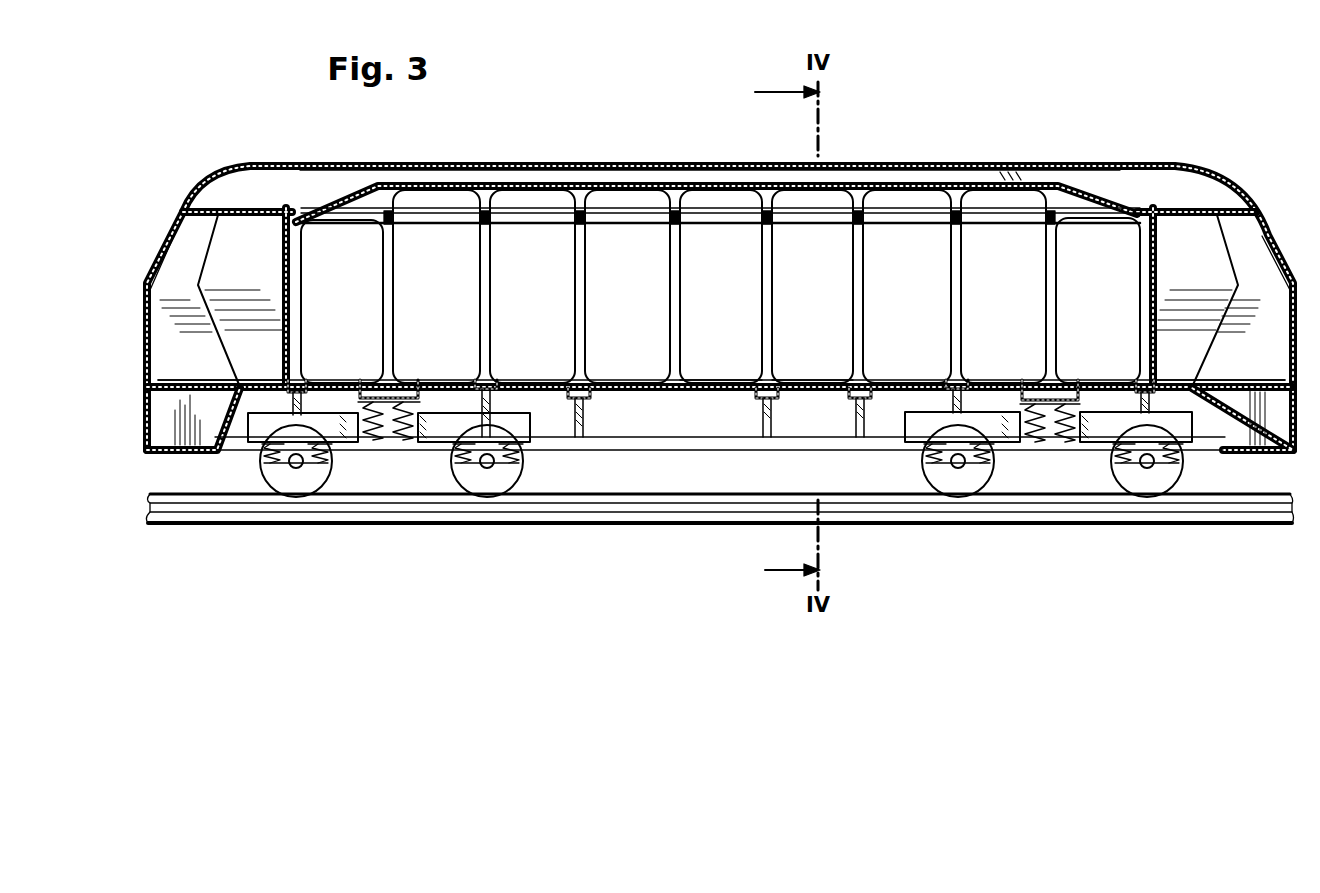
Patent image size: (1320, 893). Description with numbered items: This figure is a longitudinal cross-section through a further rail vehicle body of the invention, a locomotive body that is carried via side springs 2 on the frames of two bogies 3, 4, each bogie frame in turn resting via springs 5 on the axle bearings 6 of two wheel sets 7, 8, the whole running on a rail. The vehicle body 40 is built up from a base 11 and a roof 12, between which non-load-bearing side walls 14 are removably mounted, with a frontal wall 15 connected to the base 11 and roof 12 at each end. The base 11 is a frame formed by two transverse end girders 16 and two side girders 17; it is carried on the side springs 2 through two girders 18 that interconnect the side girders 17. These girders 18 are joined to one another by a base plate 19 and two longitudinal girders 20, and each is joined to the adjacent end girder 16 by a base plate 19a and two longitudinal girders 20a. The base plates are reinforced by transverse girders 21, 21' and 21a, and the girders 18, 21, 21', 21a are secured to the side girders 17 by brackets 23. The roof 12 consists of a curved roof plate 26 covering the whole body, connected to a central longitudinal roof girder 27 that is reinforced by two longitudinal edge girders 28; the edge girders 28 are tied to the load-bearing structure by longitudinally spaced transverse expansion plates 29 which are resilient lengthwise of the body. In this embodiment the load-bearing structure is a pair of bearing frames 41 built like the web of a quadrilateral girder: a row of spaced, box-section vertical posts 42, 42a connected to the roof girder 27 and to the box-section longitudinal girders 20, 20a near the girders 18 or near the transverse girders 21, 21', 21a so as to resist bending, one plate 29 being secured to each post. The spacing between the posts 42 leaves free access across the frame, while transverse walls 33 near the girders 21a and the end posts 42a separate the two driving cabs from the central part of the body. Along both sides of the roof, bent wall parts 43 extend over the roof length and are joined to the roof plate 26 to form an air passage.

The side springs 2 is at (385, 441).
The bogie 3 is at (343, 440).
The bogie 4 is at (1015, 441).
The springs 5 is at (275, 455).
The axle bearings 6 is at (283, 465).
The wheel set 7 is at (324, 478).
The wheel set 8 is at (462, 483).
The base 11 is at (660, 458).
The roof 12 is at (872, 152).
The side walls 14 is at (218, 237).
The frontal wall 15 is at (178, 254).
The end girders 16 is at (167, 450).
The side girders 17 is at (743, 443).
The girders 18 is at (409, 378).
The base plate 19 is at (809, 386).
The base plate 19a is at (339, 386).
The longitudinal girders 20 is at (716, 386).
The longitudinal girders 20a is at (200, 385).
The transverse girders 21 is at (719, 402).
The transverse girders 21' is at (721, 365).
The transverse girders 21a is at (293, 380).
The brackets 23 is at (298, 392).
The roof plate 26 is at (910, 165).
The roof girder 27 is at (942, 180).
The longitudinal edge girders 28 is at (978, 205).
The transverse expansion plates 29 is at (481, 226).
The transverse walls 33 is at (284, 262).
The vehicle body 40 is at (719, 150).
The bearing frames 41 is at (660, 232).
The posts 42 is at (481, 288).
The posts 42a is at (300, 278).
The bent wall parts 43 is at (738, 197).